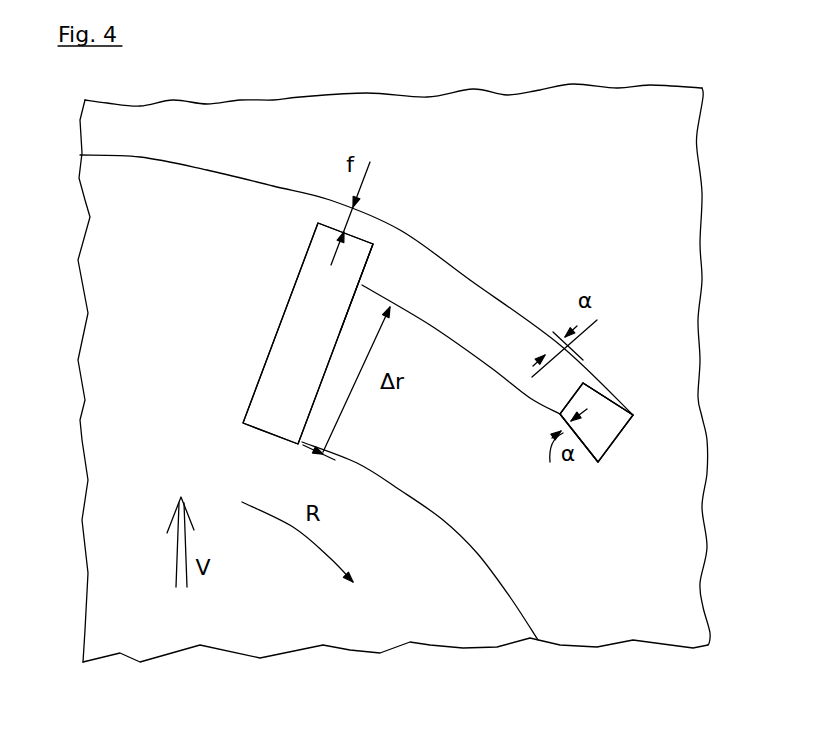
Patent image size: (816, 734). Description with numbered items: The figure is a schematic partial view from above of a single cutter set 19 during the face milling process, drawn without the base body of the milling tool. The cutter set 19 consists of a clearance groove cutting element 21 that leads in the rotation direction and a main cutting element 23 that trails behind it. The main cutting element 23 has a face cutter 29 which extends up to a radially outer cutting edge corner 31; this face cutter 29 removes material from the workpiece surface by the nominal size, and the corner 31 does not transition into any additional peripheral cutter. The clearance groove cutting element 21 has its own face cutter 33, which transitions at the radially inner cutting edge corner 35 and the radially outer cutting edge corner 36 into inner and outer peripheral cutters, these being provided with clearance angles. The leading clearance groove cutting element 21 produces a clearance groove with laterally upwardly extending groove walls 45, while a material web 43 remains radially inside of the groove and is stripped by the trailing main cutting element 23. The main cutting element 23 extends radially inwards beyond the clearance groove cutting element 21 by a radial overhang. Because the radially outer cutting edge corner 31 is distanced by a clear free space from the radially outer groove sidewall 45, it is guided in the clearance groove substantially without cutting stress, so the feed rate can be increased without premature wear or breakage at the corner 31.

The cutter set 19 is at (457, 55).
The clearance groove cutting element 21 is at (597, 420).
The main cutting element 23 is at (358, 238).
The face cutter 29 is at (404, 243).
The radially outer cutting edge corner 31 is at (368, 268).
The face cutter 33 is at (618, 437).
The radially inner cutting edge corner 35 is at (598, 462).
The radially outer cutting edge corner 36 is at (632, 413).
The material web 43 is at (542, 405).
The groove walls 45 is at (501, 300).